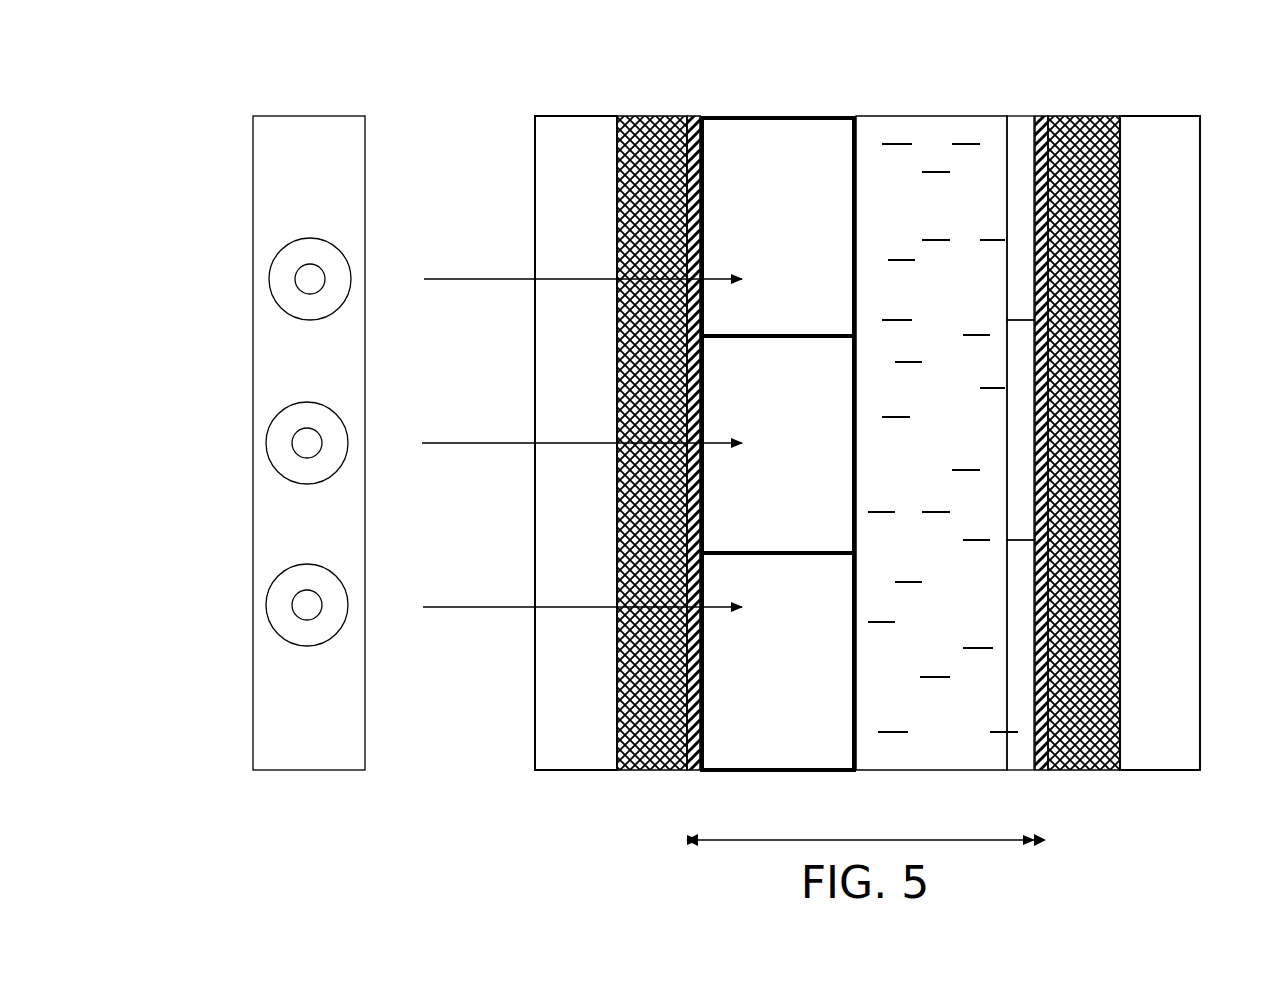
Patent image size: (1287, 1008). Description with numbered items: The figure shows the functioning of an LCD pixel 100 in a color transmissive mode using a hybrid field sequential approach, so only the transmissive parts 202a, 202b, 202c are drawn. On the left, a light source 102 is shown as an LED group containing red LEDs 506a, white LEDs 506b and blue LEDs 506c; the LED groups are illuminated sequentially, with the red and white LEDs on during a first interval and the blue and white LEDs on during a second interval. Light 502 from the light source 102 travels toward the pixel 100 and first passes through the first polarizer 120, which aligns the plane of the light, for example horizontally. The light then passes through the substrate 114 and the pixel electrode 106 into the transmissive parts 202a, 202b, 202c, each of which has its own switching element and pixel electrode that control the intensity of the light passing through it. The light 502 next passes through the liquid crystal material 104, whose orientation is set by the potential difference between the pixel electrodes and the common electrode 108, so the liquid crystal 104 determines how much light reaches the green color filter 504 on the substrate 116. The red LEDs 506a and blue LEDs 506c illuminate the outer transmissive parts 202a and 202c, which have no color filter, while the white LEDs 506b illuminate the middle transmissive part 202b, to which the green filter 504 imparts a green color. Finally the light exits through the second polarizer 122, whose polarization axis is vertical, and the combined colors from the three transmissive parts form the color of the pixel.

The pixel 100 is at (694, 458).
The light source 102 is at (311, 770).
The liquid crystal material 104 is at (967, 133).
The pixel electrode 106 is at (687, 768).
The common electrode 108 is at (1043, 771).
The substrate 114 is at (645, 117).
The substrate 116 is at (1080, 117).
The first polarizer 120 is at (578, 118).
The second polarizer 122 is at (1162, 118).
The transmissive part 202a is at (778, 227).
The transmissive part 202b is at (778, 444).
The transmissive part 202c is at (778, 661).
The light 502 is at (507, 609).
The green color filter 504 is at (1020, 460).
The red LEDs 506a is at (269, 279).
The white LEDs 506b is at (266, 443).
The blue LEDs 506c is at (266, 605).